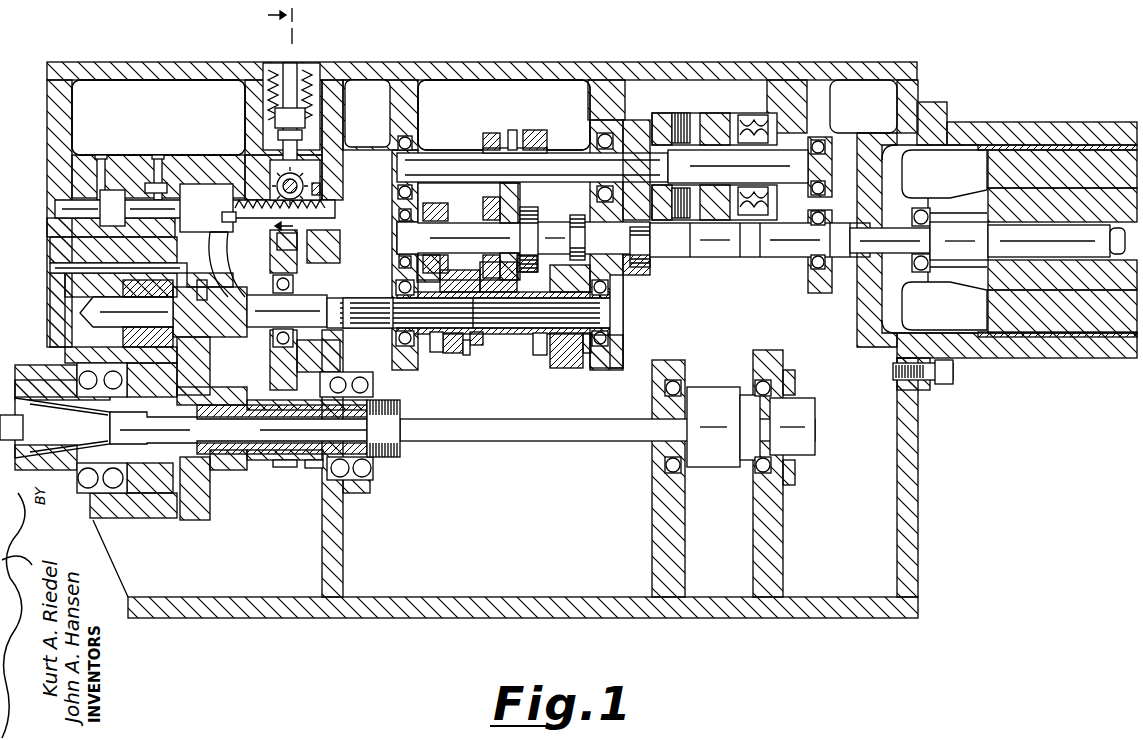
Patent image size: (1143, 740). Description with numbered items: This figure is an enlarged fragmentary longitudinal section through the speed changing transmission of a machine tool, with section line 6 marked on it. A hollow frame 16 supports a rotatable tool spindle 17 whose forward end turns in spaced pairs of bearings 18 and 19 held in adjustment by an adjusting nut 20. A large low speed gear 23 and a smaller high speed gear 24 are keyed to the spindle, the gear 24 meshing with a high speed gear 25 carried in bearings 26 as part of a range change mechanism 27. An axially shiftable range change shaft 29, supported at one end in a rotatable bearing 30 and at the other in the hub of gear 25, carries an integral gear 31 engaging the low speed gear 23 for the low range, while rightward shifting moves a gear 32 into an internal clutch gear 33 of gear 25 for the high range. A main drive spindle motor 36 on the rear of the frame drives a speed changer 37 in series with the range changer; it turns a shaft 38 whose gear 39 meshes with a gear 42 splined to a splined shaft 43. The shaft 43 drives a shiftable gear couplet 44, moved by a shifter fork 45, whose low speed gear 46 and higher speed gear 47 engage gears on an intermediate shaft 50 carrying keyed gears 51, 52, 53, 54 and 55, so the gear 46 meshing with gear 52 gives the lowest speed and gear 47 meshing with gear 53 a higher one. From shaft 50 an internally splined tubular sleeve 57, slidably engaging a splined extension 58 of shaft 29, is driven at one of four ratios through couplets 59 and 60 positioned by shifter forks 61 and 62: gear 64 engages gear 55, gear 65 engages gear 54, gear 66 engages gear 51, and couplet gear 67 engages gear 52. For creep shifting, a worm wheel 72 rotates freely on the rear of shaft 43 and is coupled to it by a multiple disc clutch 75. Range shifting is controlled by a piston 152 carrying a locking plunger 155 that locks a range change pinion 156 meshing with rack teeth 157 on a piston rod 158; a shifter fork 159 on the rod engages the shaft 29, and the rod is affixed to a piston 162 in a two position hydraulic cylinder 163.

The hollow frame 16 is at (412, 622).
The tool spindle 17 is at (52, 452).
The bearings 18 is at (74, 480).
The bearings 19 is at (326, 474).
The adjusting nut 20 is at (400, 452).
The low speed gear 23 is at (210, 506).
The high speed gear 24 is at (282, 467).
The high speed gear 25 is at (288, 380).
The bearings 26 is at (330, 380).
The range change mechanism 27 is at (232, 210).
The range change shaft 29 is at (258, 297).
The rotatable bearing 30 is at (190, 352).
The gear 31 is at (204, 285).
The gear 32 is at (238, 276).
The internal clutch gear 33 is at (253, 335).
The main drive spindle motor 36 is at (968, 121).
The speed changer 37 is at (443, 131).
The shaft 38 is at (736, 257).
The gear 39 is at (638, 270).
The gear 42 is at (630, 122).
The splined shaft 43 is at (562, 165).
The gear couplet 44 is at (528, 131).
The shifter fork 45 is at (513, 130).
The low speed gear 46 is at (494, 133).
The higher speed gear 47 is at (533, 132).
The intermediate shaft 50 is at (398, 238).
The gear 51 is at (443, 208).
The gear 52 is at (486, 205).
The gear 53 is at (527, 212).
The driving gear 54 is at (518, 242).
The gear 55 is at (578, 215).
The tubular sleeve 57 is at (616, 322).
The splined extension 58 is at (386, 298).
The gear couplet 59 is at (605, 373).
The gear couplet 60 is at (482, 344).
The shifter fork 61 is at (540, 355).
The shifter fork 62 is at (467, 355).
The gear 64 is at (580, 376).
The gear 65 is at (555, 360).
The gear 66 is at (446, 350).
The couplet gear 67 is at (492, 345).
The worm wheel 72 is at (748, 113).
The multiple disc clutch 75 is at (682, 113).
The piston 152 is at (158, 117).
The locking plunger 155 is at (300, 162).
The range change pinion 156 is at (305, 182).
The rack teeth 157 is at (321, 190).
The piston rod 158 is at (178, 204).
The shifter fork 159 is at (232, 222).
The piston 162 is at (108, 180).
The hydraulic cylinder 163 is at (165, 188).
The section line 6- 6 is at (292, 128).